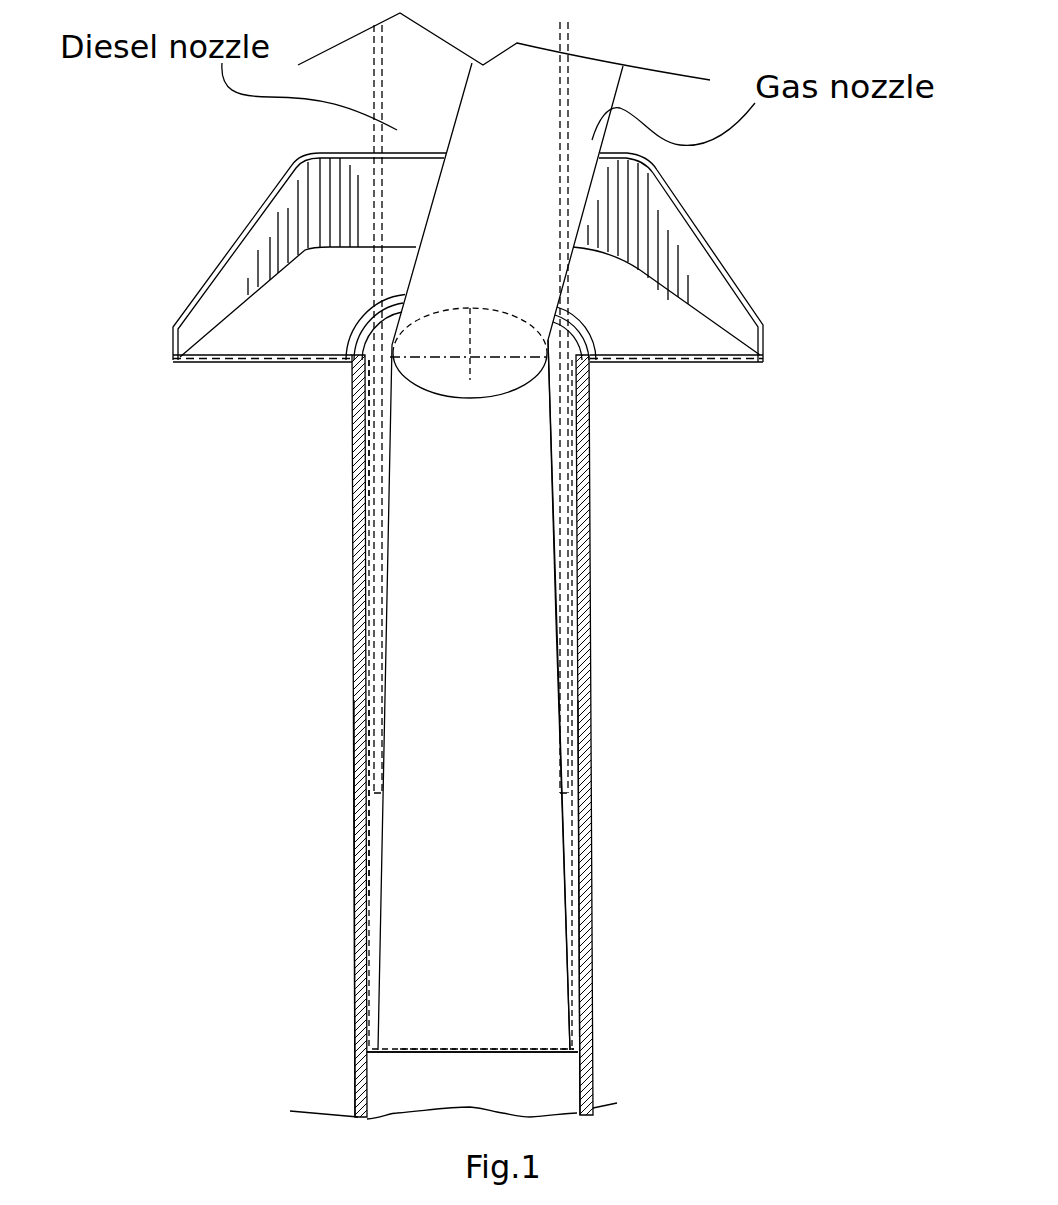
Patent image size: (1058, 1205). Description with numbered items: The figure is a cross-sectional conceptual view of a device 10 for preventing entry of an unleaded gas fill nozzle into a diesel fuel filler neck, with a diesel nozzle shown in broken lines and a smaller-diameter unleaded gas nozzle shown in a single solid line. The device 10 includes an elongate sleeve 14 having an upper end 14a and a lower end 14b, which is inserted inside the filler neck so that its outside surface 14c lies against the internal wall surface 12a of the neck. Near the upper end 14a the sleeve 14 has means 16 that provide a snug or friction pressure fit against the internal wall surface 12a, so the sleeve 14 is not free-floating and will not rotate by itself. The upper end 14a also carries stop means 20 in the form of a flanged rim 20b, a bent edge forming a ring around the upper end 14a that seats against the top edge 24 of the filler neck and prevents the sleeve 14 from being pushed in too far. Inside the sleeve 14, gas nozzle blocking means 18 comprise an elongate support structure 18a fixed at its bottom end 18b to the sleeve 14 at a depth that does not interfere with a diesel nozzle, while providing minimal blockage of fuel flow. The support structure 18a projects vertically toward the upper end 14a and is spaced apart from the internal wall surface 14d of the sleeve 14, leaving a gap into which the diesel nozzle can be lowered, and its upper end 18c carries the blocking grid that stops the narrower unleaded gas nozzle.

The device 10 is at (340, 302).
The internal wall surface 12a is at (583, 1088).
The elongate sleeve 14 is at (478, 729).
The upper end 14a is at (540, 440).
The lower end 14b is at (545, 960).
The outside surface 14c is at (590, 918).
The internal wall surface 14d is at (372, 852).
The means for providing a snug fit 16 is at (592, 327).
The gas nozzle blocking means 18 is at (470, 380).
The elongate support structure 18a is at (390, 755).
The bottom end 18b is at (565, 990).
The upper end 18c is at (390, 408).
The stop means 20 is at (588, 335).
The flanged rim 20b is at (365, 343).
The top edge 24 is at (703, 207).